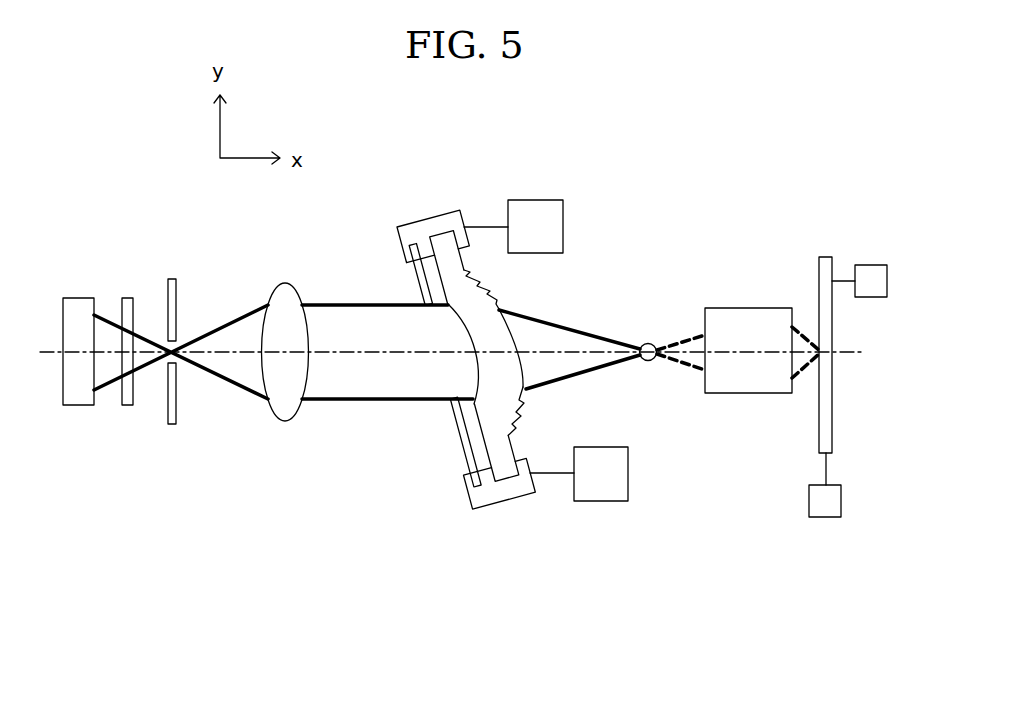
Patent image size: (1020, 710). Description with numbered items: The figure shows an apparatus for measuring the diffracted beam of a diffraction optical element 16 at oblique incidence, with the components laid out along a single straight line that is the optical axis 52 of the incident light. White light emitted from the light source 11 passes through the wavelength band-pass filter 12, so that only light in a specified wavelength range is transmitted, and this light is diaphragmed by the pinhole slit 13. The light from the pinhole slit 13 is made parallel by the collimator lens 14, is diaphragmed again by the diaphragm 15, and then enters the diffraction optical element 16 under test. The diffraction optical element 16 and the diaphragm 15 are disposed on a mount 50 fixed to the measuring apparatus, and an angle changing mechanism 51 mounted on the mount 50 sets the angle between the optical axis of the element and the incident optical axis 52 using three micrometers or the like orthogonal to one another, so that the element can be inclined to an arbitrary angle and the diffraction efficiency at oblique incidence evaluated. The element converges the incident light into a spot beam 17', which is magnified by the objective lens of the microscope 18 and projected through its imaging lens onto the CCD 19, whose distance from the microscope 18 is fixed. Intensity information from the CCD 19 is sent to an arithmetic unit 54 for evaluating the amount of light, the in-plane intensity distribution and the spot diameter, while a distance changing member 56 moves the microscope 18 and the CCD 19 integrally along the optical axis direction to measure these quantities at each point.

The light source 11 is at (80, 298).
The wavelength band-pass filter 12 is at (128, 298).
The pinhole slit 13 is at (172, 279).
The collimator lens 14 is at (288, 283).
The diaphragm 15 is at (418, 283).
The diffraction optical element 16 is at (440, 243).
The spot beam 17' is at (648, 312).
The microscope 18 is at (733, 308).
The CCD 19 is at (828, 257).
The mount 50 is at (445, 220).
The angle changing mechanism 51 is at (535, 200).
The optical axis 52 is at (858, 353).
The arithmetic unit 54 is at (825, 517).
The distance changing member 56 is at (872, 265).